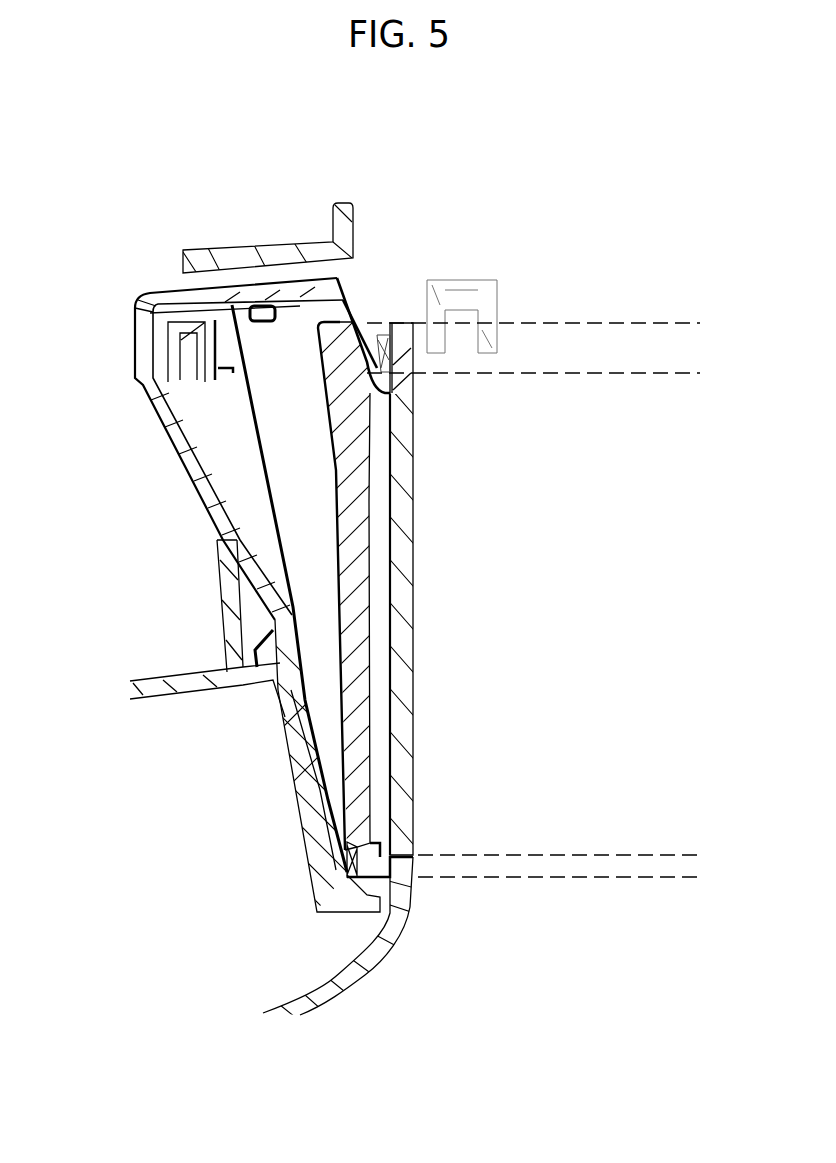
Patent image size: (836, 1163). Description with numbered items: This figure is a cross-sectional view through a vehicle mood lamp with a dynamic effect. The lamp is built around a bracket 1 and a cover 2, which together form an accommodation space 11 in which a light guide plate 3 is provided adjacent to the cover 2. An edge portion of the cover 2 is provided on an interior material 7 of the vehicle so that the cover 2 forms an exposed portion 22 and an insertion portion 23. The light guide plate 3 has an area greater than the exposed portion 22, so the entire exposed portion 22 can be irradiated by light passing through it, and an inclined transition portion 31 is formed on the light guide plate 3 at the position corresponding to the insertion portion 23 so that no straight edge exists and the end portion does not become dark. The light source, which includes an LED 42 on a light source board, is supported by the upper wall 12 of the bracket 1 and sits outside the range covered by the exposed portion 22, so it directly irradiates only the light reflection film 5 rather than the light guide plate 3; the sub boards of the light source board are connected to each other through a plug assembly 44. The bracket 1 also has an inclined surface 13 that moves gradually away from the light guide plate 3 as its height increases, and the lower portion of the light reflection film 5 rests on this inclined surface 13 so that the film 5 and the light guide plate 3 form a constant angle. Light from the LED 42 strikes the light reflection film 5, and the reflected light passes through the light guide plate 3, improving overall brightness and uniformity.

The bracket 1 is at (214, 512).
The cover 2 is at (408, 466).
The light guide plate 3 is at (360, 620).
The light reflection film 5 is at (288, 611).
The interior material 7 is at (498, 282).
The accommodation space 11 is at (210, 447).
The upper wall 12 is at (316, 294).
The inclined surface 13 is at (312, 730).
The exposed portion 22 is at (641, 855).
The insertion portion 23 is at (641, 324).
The inclined transition portion 31 is at (360, 334).
The LED 42 is at (253, 302).
The plug assembly 44 is at (230, 380).